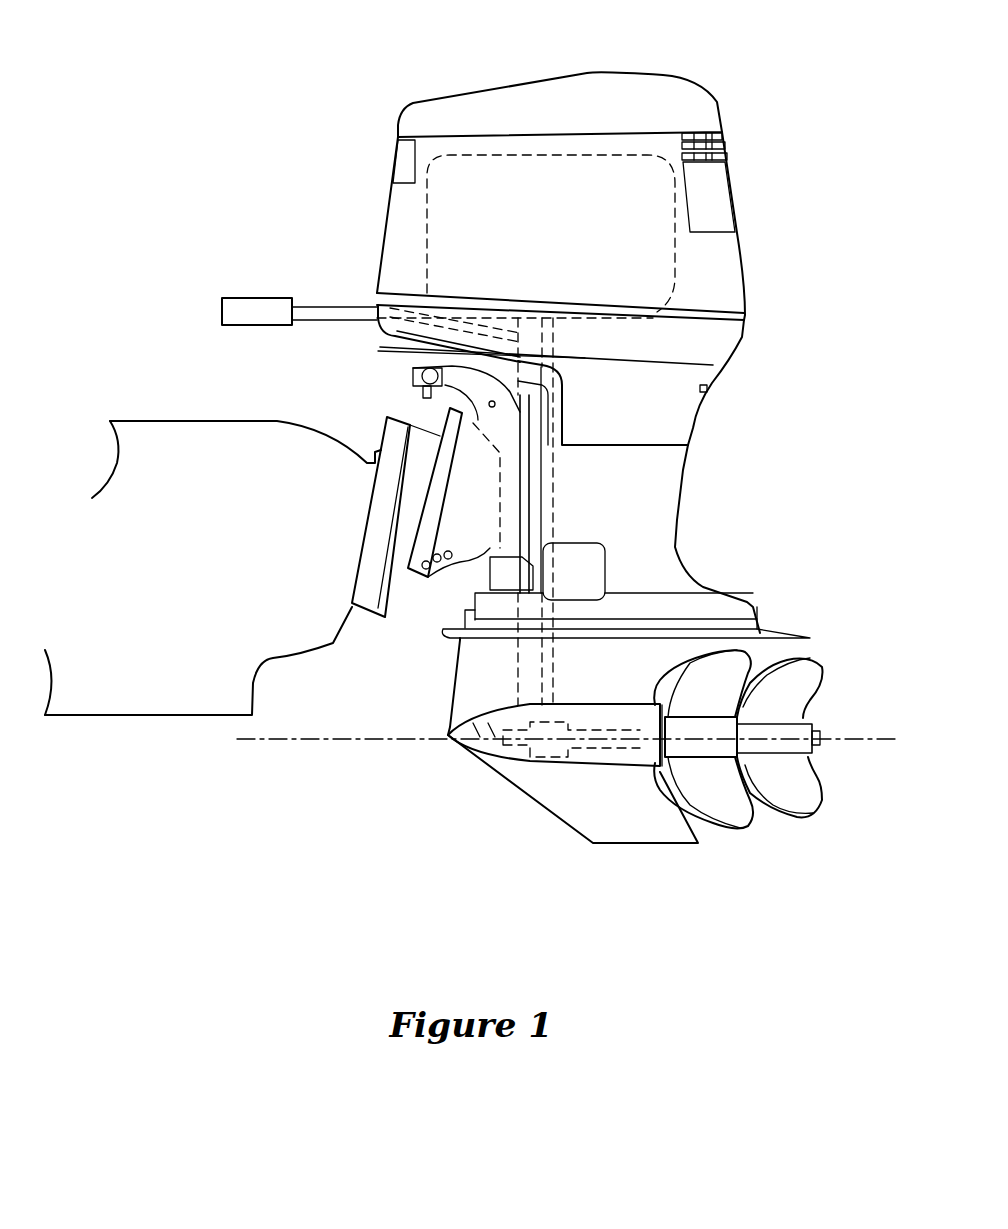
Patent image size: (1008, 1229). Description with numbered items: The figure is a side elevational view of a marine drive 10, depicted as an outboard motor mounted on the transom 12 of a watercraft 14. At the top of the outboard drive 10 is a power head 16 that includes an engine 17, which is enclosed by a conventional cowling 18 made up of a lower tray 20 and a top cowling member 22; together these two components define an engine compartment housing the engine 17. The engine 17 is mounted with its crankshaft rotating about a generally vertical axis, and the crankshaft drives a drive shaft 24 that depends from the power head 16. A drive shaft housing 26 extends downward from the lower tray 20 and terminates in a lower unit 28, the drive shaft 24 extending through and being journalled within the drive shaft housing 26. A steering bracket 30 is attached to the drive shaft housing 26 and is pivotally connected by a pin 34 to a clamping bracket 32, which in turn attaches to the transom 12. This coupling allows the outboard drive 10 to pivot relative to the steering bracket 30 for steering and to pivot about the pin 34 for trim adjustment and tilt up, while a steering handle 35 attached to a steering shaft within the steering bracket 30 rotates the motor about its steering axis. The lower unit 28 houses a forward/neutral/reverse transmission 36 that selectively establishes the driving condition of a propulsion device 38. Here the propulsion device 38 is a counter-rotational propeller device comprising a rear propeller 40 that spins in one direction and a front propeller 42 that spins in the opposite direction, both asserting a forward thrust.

The marine drive 10 is at (752, 65).
The transom 12 is at (305, 633).
The watercraft 14 is at (187, 447).
The power head 16 is at (485, 105).
The engine 17 is at (460, 218).
The cowling 18 is at (728, 198).
The lower tray 20 is at (723, 343).
The top cowling member 22 is at (722, 263).
The drive shaft 24 is at (555, 481).
The drive shaft housing 26 is at (660, 507).
The lower unit 28 is at (477, 677).
The steering bracket 30 is at (483, 572).
The clamping bracket 32 is at (465, 480).
The pin 34 is at (412, 383).
The steering handle 35 is at (272, 303).
The transmission 36 is at (557, 750).
The propulsion device 38 is at (850, 663).
The rear propeller 40 is at (798, 795).
The front propeller 42 is at (722, 802).